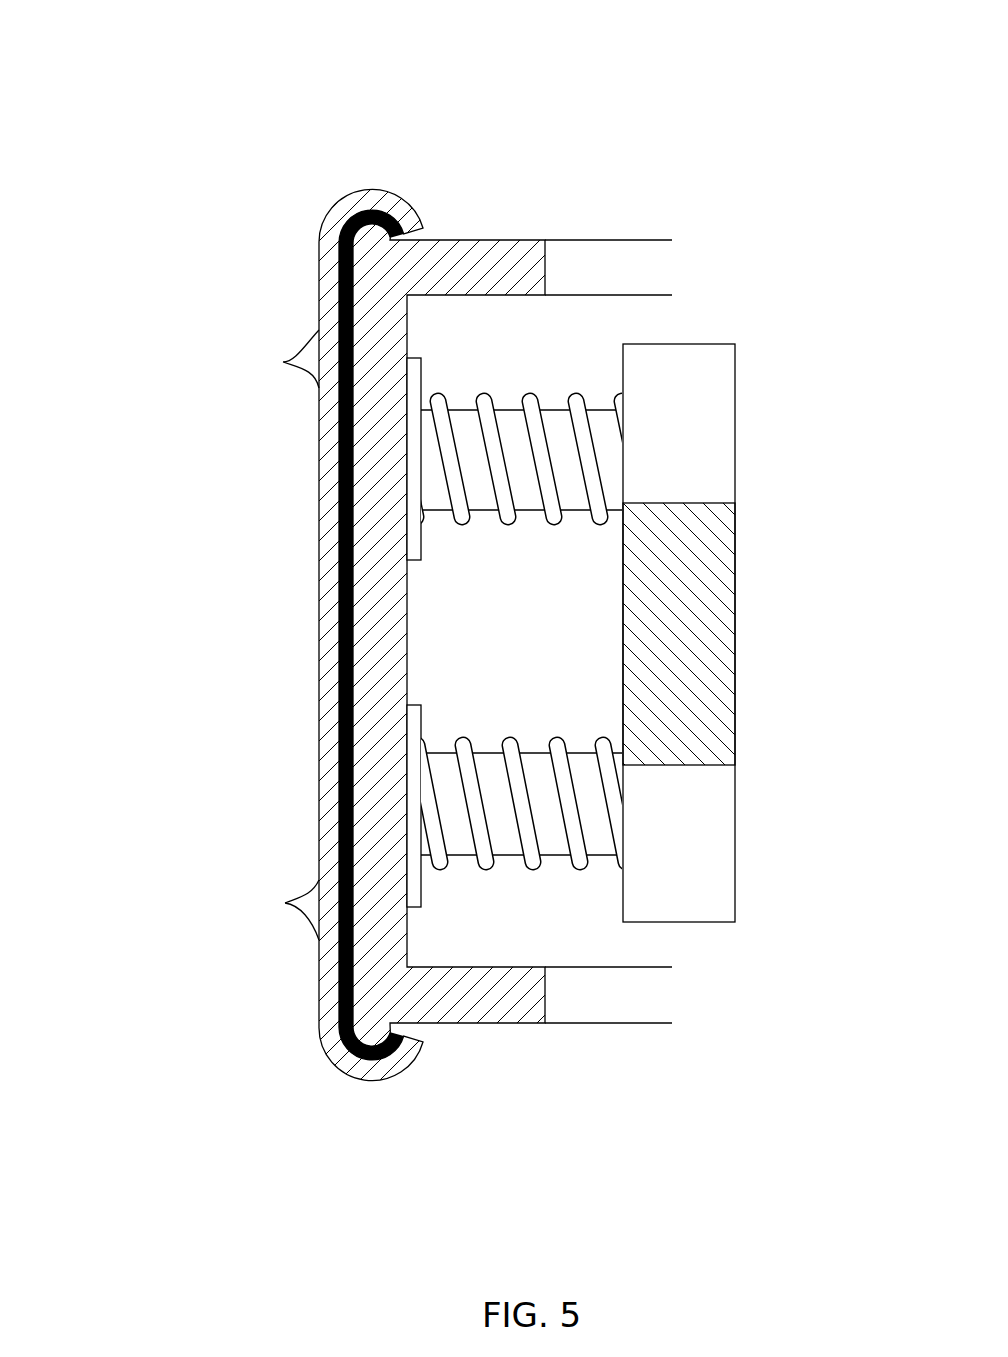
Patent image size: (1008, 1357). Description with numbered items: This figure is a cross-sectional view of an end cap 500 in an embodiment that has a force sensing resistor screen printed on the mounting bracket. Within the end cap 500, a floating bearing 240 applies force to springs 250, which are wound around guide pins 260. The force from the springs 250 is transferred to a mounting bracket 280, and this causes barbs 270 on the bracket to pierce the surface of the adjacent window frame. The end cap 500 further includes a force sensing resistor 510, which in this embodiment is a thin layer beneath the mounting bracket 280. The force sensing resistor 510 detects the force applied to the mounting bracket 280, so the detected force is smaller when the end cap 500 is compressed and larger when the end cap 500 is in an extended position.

The end cap 500 is at (158, 63).
The floating bearing 240 is at (717, 635).
The springs 250 is at (503, 512).
The guide pins 260 is at (517, 427).
The barbs 270 is at (308, 910).
The mounting bracket 280 is at (326, 720).
The force sensing resistor 510 is at (345, 503).